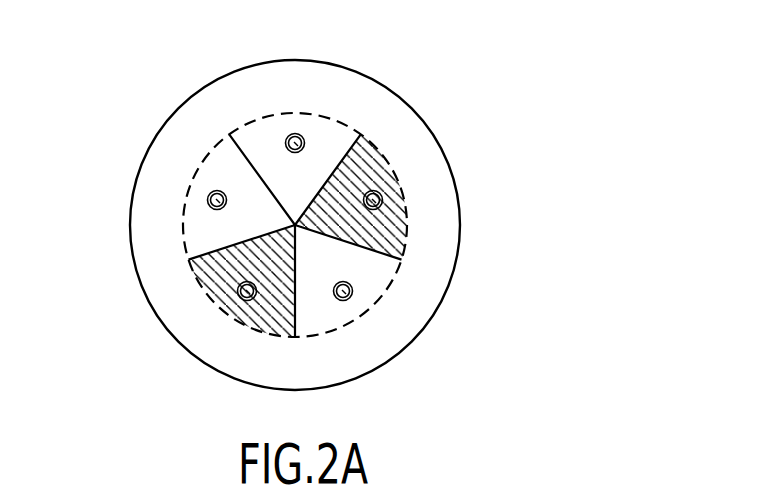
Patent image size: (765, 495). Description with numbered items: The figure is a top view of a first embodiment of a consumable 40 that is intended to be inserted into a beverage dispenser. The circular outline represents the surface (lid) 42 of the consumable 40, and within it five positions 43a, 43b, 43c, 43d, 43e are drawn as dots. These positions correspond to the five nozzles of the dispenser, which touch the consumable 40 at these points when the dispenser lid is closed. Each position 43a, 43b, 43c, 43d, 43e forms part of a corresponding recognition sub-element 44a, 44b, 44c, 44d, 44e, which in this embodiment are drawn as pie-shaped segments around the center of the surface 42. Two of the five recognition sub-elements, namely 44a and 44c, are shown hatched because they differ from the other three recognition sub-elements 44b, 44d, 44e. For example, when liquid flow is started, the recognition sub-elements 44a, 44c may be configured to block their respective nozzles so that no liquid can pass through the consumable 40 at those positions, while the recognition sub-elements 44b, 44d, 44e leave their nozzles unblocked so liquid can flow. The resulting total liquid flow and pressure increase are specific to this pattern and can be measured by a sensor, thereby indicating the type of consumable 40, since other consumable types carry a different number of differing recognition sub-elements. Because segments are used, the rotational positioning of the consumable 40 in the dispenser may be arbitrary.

The consumable 40 is at (411, 102).
The surface (lid) 42 is at (187, 130).
The position 43a is at (383, 200).
The position 43b is at (350, 300).
The position 43c is at (240, 297).
The position 43d is at (207, 197).
The position 43e is at (301, 135).
The recognition sub-element 44a is at (373, 170).
The recognition sub-element 44b is at (367, 282).
The recognition sub-element 44c is at (262, 312).
The recognition sub-element 44d is at (205, 220).
The recognition sub-element 44e is at (267, 142).